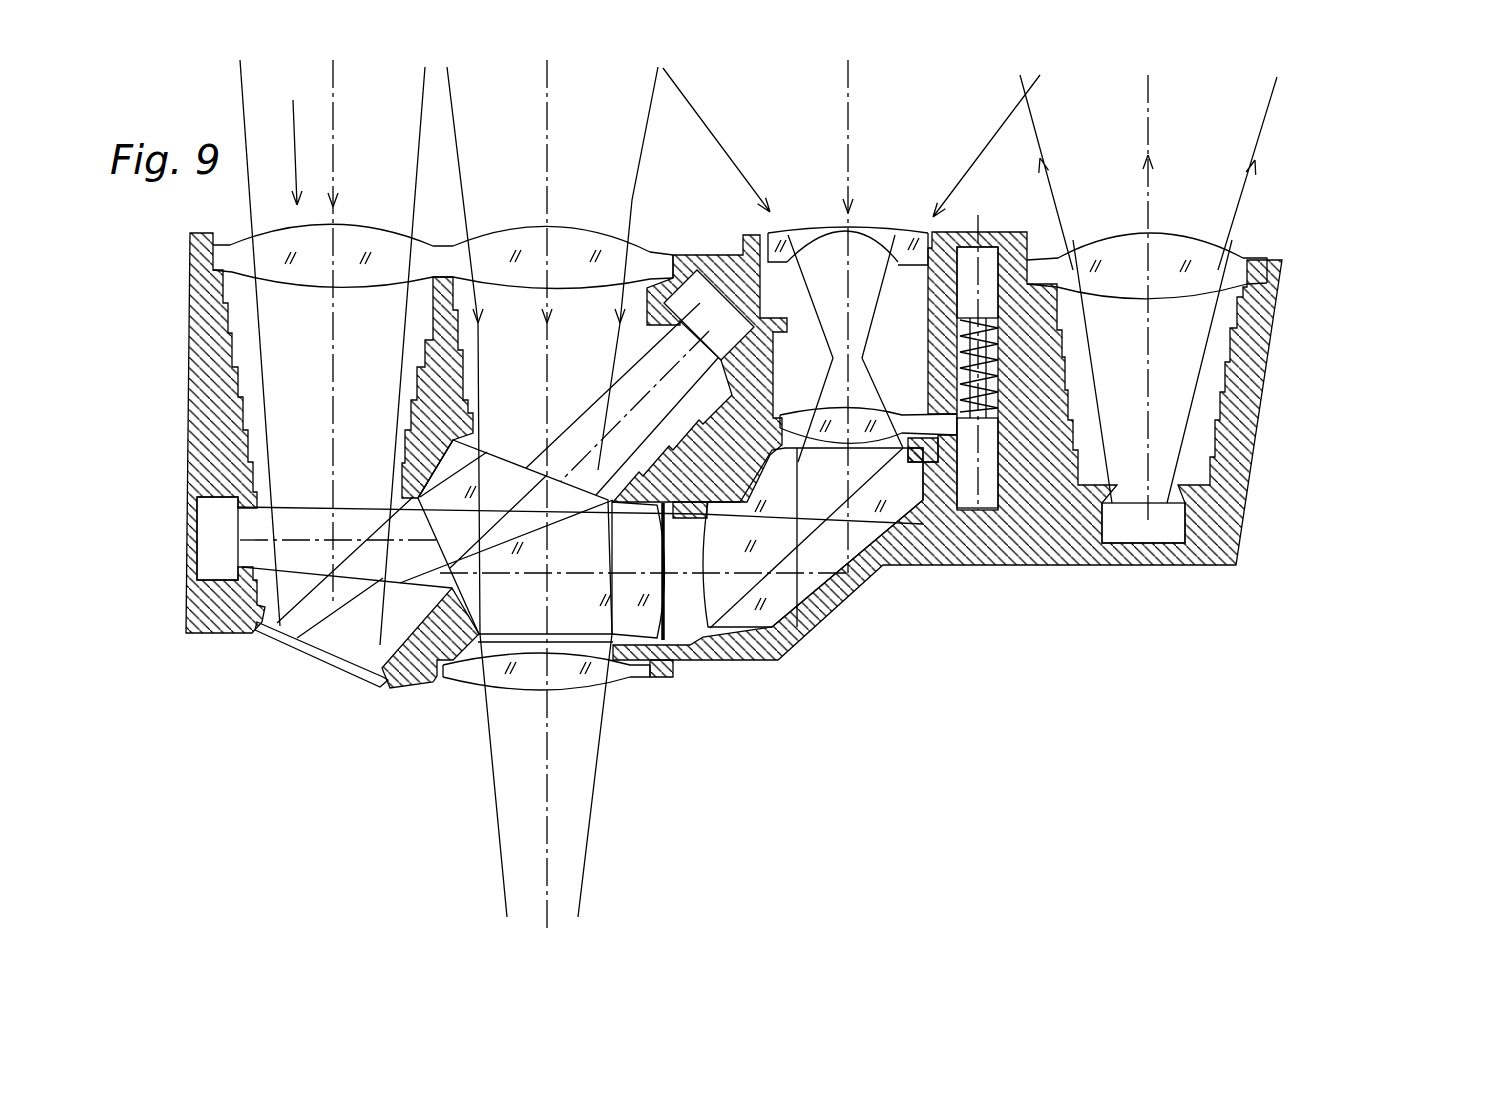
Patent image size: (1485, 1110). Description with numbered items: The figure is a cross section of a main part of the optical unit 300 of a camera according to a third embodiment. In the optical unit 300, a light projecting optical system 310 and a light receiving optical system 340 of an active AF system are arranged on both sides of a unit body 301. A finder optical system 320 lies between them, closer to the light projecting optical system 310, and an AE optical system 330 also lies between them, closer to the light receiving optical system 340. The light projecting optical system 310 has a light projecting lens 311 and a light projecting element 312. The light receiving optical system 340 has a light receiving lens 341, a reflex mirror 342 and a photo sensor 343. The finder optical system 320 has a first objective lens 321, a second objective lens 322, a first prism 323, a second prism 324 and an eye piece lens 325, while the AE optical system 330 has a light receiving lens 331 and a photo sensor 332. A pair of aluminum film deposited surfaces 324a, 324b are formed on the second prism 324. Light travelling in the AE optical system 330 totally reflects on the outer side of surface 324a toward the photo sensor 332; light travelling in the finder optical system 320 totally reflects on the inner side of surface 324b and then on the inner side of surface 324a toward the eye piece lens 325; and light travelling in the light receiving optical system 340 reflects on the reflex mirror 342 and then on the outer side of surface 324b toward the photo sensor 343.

The optical unit 300 is at (1332, 373).
The unit body 301 is at (1247, 452).
The light projecting optical system 310 is at (1403, 170).
The light projecting lens 311 is at (1177, 240).
The light projecting element 312 is at (1148, 517).
The finder optical system 320 is at (805, 200).
The first objective lens 321 is at (892, 232).
The second objective lens 322 is at (865, 428).
The first prism 323 is at (833, 553).
The second prism 324 is at (680, 632).
The aluminum film deposited surface 324a is at (487, 445).
The aluminum film deposited surface 324b is at (393, 507).
The eye piece lens 325 is at (617, 672).
The AE optical system 330 is at (733, 166).
The light receiving lens 331 is at (598, 245).
The photo sensor 332 is at (700, 295).
The light receiving optical system 340 is at (253, 208).
The light receiving lens 341 is at (362, 240).
The reflex mirror 342 is at (340, 663).
The photo sensor 343 is at (213, 568).